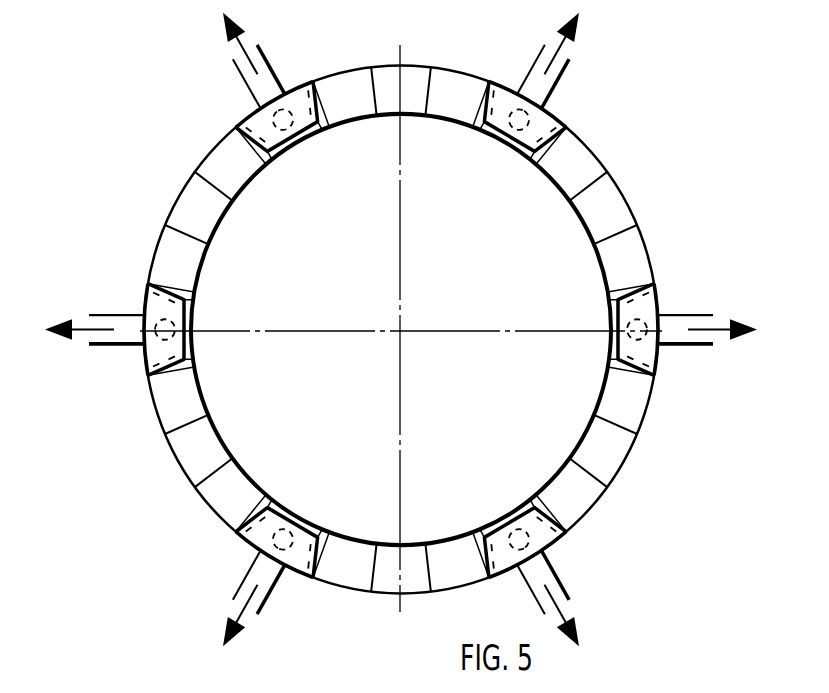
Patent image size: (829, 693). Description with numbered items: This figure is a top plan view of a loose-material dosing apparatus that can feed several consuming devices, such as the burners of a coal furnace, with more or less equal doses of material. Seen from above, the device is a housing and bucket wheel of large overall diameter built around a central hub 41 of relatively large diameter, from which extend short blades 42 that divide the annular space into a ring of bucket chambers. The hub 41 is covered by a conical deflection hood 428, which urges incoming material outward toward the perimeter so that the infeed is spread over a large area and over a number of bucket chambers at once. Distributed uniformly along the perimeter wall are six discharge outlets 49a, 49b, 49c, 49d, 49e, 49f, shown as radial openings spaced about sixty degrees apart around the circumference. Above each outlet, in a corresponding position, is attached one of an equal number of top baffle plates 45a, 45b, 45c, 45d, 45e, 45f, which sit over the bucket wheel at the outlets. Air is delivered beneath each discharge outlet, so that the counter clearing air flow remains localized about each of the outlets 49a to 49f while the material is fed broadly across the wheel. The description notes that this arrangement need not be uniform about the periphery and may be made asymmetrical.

The hub 41 is at (583, 213).
The blades 42 is at (632, 243).
The conical deflection hood 428 is at (520, 422).
The top baffle plate 45a is at (158, 310).
The top baffle plate 45b is at (255, 123).
The top baffle plate 45c is at (535, 120).
The top baffle plate 45d is at (648, 305).
The top baffle plate 45e is at (545, 538).
The top baffle plate 45f is at (262, 535).
The discharge outlet 49a is at (117, 347).
The discharge outlet 49b is at (270, 73).
The discharge outlet 49c is at (527, 73).
The discharge outlet 49d is at (700, 341).
The discharge outlet 49e is at (565, 587).
The discharge outlet 49f is at (240, 588).